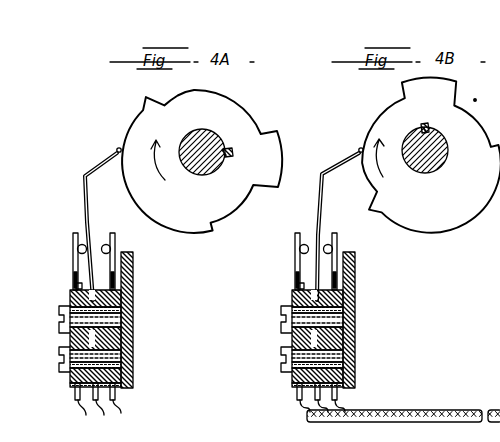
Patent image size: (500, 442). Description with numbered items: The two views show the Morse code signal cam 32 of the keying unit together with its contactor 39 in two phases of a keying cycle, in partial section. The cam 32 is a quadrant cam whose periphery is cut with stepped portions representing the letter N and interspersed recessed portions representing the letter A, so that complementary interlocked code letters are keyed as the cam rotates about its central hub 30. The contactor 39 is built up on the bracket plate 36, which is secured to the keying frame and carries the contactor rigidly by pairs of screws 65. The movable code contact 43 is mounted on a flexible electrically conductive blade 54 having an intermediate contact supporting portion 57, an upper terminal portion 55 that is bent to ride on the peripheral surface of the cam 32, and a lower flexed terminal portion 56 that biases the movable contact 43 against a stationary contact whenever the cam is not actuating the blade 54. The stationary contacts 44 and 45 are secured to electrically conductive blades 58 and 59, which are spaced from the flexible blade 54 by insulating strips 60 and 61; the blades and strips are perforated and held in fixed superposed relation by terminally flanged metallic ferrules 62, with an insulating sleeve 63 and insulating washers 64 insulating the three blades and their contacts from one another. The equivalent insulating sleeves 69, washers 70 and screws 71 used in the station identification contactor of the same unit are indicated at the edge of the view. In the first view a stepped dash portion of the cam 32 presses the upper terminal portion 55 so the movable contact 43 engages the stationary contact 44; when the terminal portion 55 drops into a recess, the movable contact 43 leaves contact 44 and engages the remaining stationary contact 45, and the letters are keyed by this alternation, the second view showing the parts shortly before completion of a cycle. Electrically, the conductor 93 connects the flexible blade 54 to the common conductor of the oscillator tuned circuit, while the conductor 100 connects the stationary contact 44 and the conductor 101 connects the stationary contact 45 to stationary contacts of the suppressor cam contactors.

In FIG. 4A, the rotor shaft 30 is at (198, 175).
In FIG. 4B, the rotor shaft 30 is at (417, 176).
In FIG. 4A, the Morse code signal cam 32 is at (246, 112).
In FIG. 4B, the Morse code signal cam 32 is at (436, 233).
In FIG. 4A, the bracket plate 36 is at (133, 256).
In FIG. 4B, the bracket plate 36 is at (364, 320).
In FIG. 4A, the Morse code cam contactor 39 is at (76, 288).
In FIG. 4B, the Morse code cam contactor 39 is at (283, 287).
In FIG. 4A, the movable code contact 43 is at (93, 242).
In FIG. 4B, the movable code contact 43 is at (340, 224).
In FIG. 4A, the stationary contact 44 is at (73, 235).
In FIG. 4B, the stationary contact 44 is at (287, 259).
In FIG. 4A, the stationary contact 45 is at (116, 236).
In FIG. 4B, the stationary contact 45 is at (346, 259).
In FIG. 4A, the flexible electrically conductive blade 54 is at (85, 183).
In FIG. 4B, the flexible electrically conductive blade 54 is at (304, 189).
In FIG. 4A, the upper terminal portion 55 is at (101, 164).
In FIG. 4B, the upper terminal portion 55 is at (338, 153).
In FIG. 4A, the lower flexed terminal portion 56 is at (125, 297).
In FIG. 4B, the lower flexed terminal portion 56 is at (339, 294).
In FIG. 4A, the intermediate contact supporting portion 57 is at (86, 207).
In FIG. 4B, the intermediate contact supporting portion 57 is at (302, 209).
In FIG. 4A, the electrically conductive blade 58 is at (73, 272).
In FIG. 4B, the electrically conductive blade 58 is at (280, 273).
In FIG. 4A, the electrically conductive blade 59 is at (116, 276).
In FIG. 4B, the electrically conductive blade 59 is at (357, 273).
In FIG. 4A, the insulating strip 60 is at (72, 339).
In FIG. 4A, the insulating strip 61 is at (122, 338).
In FIG. 4A, the terminally flanged metallic ferrule 62 is at (113, 318).
In FIG. 4B, the terminally flanged metallic ferrule 62 is at (317, 337).
In FIG. 4B, the insulating sleeve 63 is at (337, 347).
In FIG. 4A, the insulating washer 64 is at (70, 301).
In FIG. 4B, the insulating washer 64 is at (320, 341).
In FIG. 4B, the screw 65 is at (272, 339).
In FIG. 4B, the insulating sleeve 69 is at (493, 343).
In FIG. 4B, the washer 70 is at (494, 295).
In FIG. 4B, the screw 71 is at (493, 345).
In FIG. 4A, the conductor 93 is at (100, 409).
In FIG. 4B, the conductor 93 is at (403, 412).
In FIG. 4A, the conductor 100 is at (88, 402).
In FIG. 4B, the conductor 100 is at (282, 405).
In FIG. 4A, the conductor 101 is at (121, 403).
In FIG. 4B, the conductor 101 is at (361, 397).